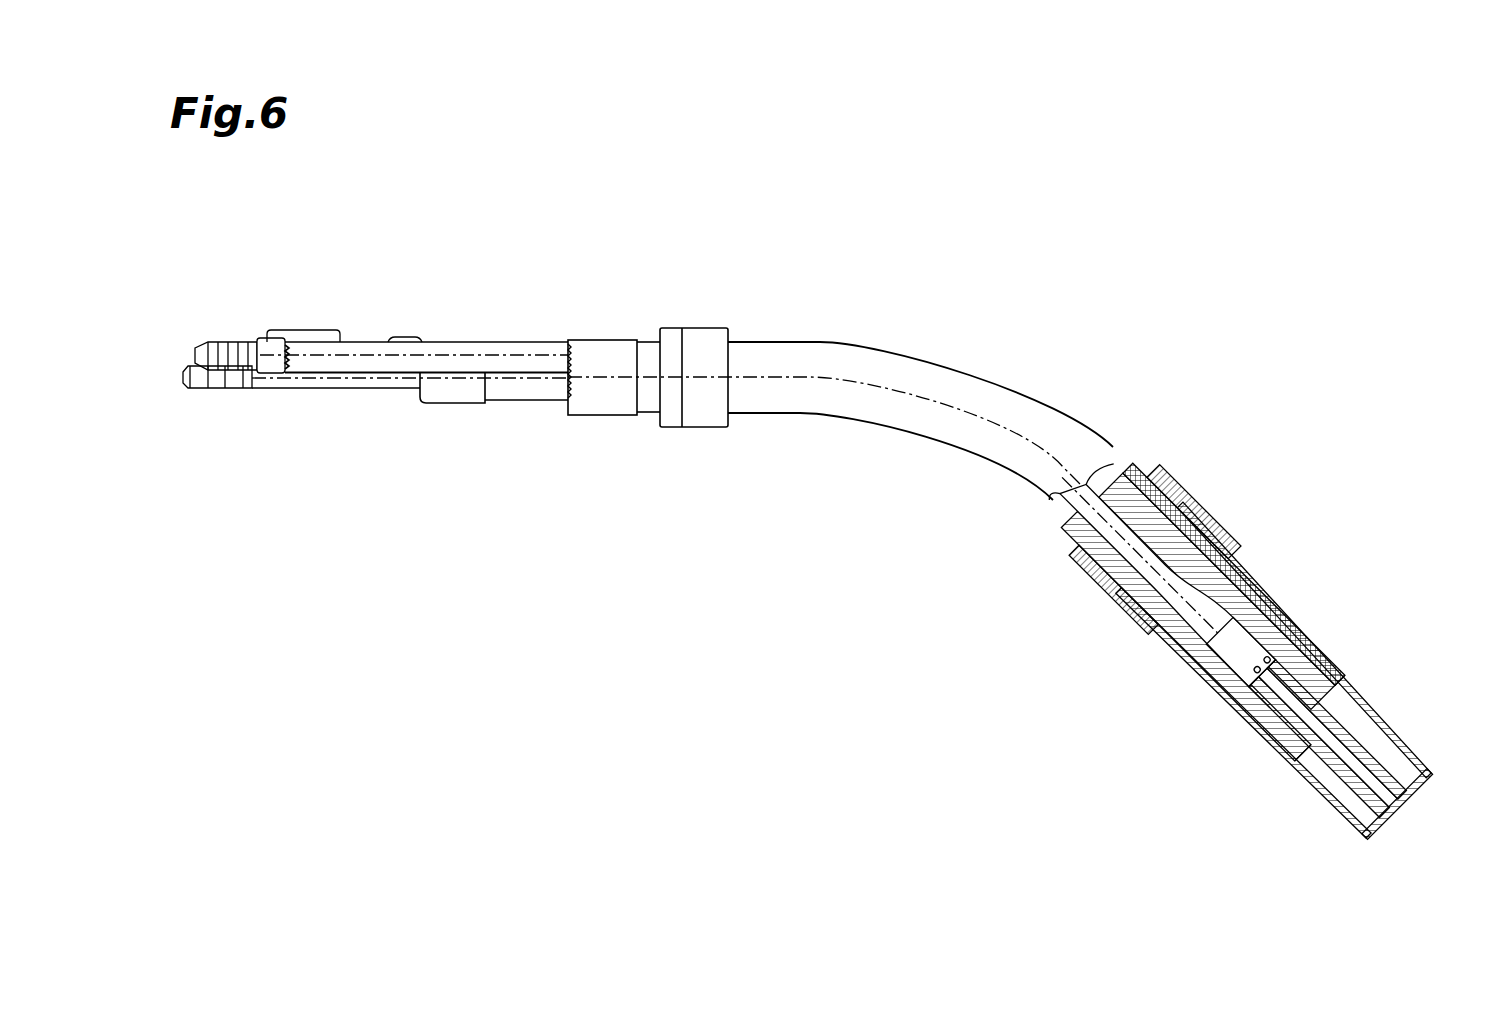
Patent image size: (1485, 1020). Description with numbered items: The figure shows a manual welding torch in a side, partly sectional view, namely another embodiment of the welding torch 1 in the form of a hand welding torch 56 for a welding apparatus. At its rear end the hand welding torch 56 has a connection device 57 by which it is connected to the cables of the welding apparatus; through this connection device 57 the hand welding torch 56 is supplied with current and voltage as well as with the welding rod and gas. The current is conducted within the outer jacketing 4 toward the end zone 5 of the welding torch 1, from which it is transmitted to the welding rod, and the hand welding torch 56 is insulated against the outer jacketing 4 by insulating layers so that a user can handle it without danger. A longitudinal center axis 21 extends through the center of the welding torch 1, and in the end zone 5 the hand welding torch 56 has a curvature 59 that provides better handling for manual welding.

The welding torch 1 is at (1277, 152).
The outer jacketing 4 is at (867, 267).
The end zone 5 is at (1300, 490).
The longitudinal center axis 21 is at (1013, 430).
The hand welding torch 56 is at (1265, 255).
The connection device 57 is at (285, 277).
The curvature 59 is at (1067, 330).